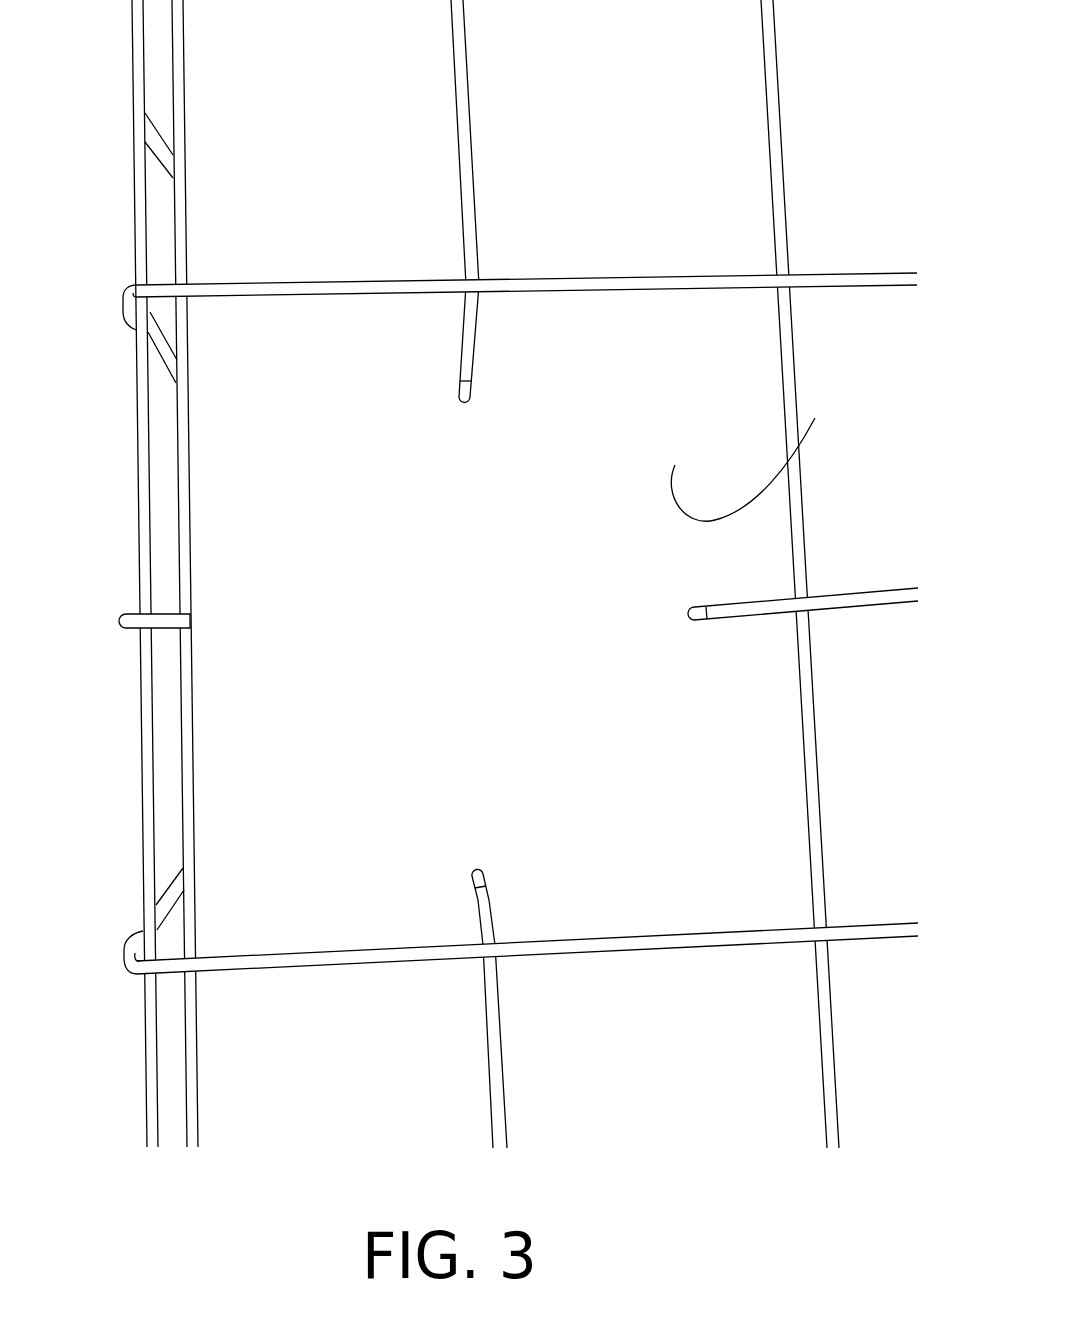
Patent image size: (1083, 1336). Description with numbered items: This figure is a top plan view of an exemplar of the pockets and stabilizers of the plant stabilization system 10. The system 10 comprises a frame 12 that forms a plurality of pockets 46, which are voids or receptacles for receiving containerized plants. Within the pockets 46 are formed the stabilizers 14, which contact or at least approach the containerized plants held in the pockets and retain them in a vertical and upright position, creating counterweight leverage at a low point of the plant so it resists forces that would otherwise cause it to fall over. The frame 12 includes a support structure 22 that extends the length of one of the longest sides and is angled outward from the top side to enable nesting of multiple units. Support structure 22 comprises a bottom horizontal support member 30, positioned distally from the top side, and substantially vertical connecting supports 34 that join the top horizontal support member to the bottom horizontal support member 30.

The plant stabilization system 10 is at (108, 665).
The frame 12 is at (282, 970).
The stabilizers 14 is at (475, 353).
The support structure 22 is at (142, 213).
The bottom horizontal support member 30 is at (177, 41).
The vertical connecting supports 34 is at (163, 353).
The pockets 46 is at (815, 418).